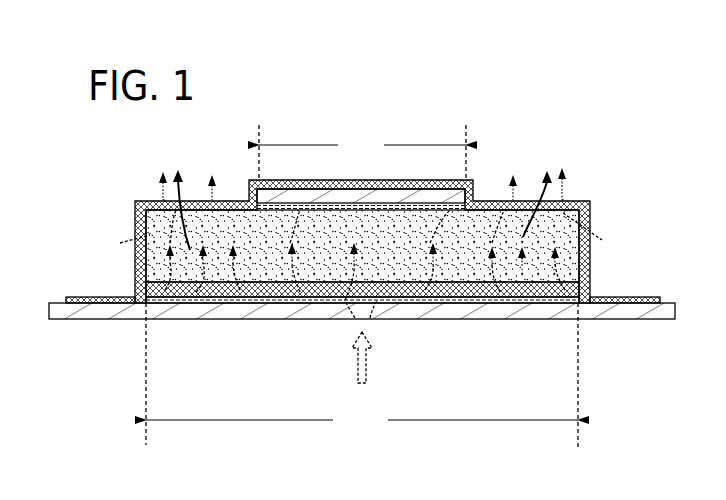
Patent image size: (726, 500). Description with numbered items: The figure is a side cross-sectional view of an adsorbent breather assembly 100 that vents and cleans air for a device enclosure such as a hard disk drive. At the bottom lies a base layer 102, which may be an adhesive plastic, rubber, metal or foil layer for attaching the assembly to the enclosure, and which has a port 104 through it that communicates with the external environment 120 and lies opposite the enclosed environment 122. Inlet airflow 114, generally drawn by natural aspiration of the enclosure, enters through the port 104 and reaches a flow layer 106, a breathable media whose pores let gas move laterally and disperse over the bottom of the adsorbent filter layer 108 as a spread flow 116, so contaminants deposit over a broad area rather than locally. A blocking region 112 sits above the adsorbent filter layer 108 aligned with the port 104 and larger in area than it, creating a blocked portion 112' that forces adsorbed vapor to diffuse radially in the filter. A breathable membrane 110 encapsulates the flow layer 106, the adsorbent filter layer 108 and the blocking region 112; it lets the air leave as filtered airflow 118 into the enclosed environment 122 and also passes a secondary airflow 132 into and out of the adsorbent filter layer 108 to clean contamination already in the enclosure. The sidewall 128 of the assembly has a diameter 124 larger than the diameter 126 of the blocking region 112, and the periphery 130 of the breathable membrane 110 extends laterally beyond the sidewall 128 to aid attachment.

The adsorbent breather assembly 100 is at (567, 106).
The base layer 102 is at (180, 319).
The port 104 is at (345, 310).
The flow layer 106 is at (552, 305).
The adsorbent filter layer 108 is at (585, 262).
The breathable membrane 110 is at (528, 210).
The blocking region 112 is at (526, 163).
The blocked portion 112' is at (373, 153).
The inlet airflow 114 is at (368, 362).
The spread flow 116 is at (281, 288).
The filtered airflow 118 is at (207, 193).
The external environment 120 is at (474, 360).
The enclosed environment 122 is at (336, 122).
The diameter of the sidewall 124 is at (362, 375).
The diameter of the blocking region 126 is at (362, 152).
The sidewall 128 is at (135, 220).
The periphery 130 is at (88, 298).
The secondary airflow 132 is at (160, 193).